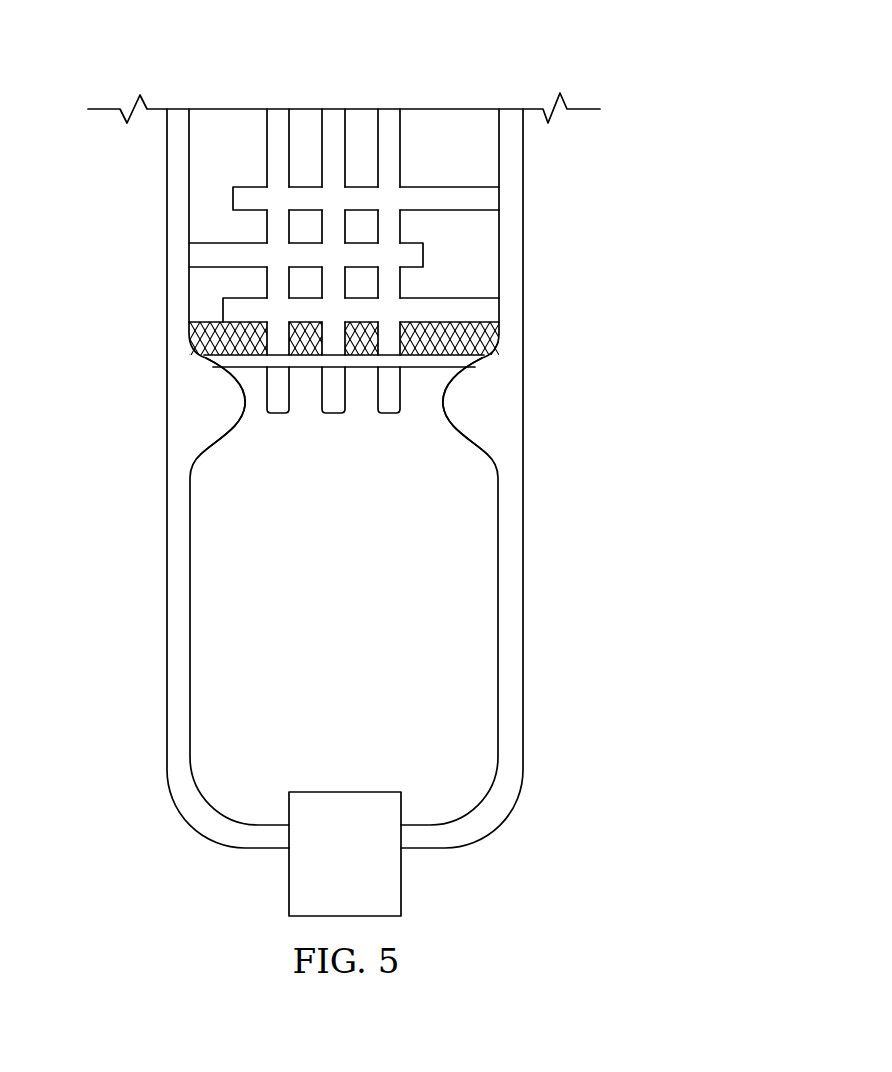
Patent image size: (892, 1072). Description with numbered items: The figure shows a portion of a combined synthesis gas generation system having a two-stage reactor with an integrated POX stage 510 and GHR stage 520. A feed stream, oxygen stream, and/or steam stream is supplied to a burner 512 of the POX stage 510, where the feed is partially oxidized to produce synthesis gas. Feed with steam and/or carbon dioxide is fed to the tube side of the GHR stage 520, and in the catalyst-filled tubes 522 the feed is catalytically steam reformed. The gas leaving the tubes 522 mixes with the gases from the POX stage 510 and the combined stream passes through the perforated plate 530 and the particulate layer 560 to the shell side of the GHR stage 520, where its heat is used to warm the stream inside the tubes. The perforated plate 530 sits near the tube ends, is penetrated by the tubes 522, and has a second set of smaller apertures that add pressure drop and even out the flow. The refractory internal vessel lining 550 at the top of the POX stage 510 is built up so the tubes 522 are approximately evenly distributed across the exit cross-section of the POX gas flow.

The POX stage 510 is at (323, 617).
The burner 512 is at (323, 870).
The GHR stage 520 is at (571, 116).
The tubes 522 is at (322, 135).
The perforated plate 530 is at (212, 362).
The refractory internal vessel lining 550 is at (190, 483).
The particulate layer 560 is at (494, 338).